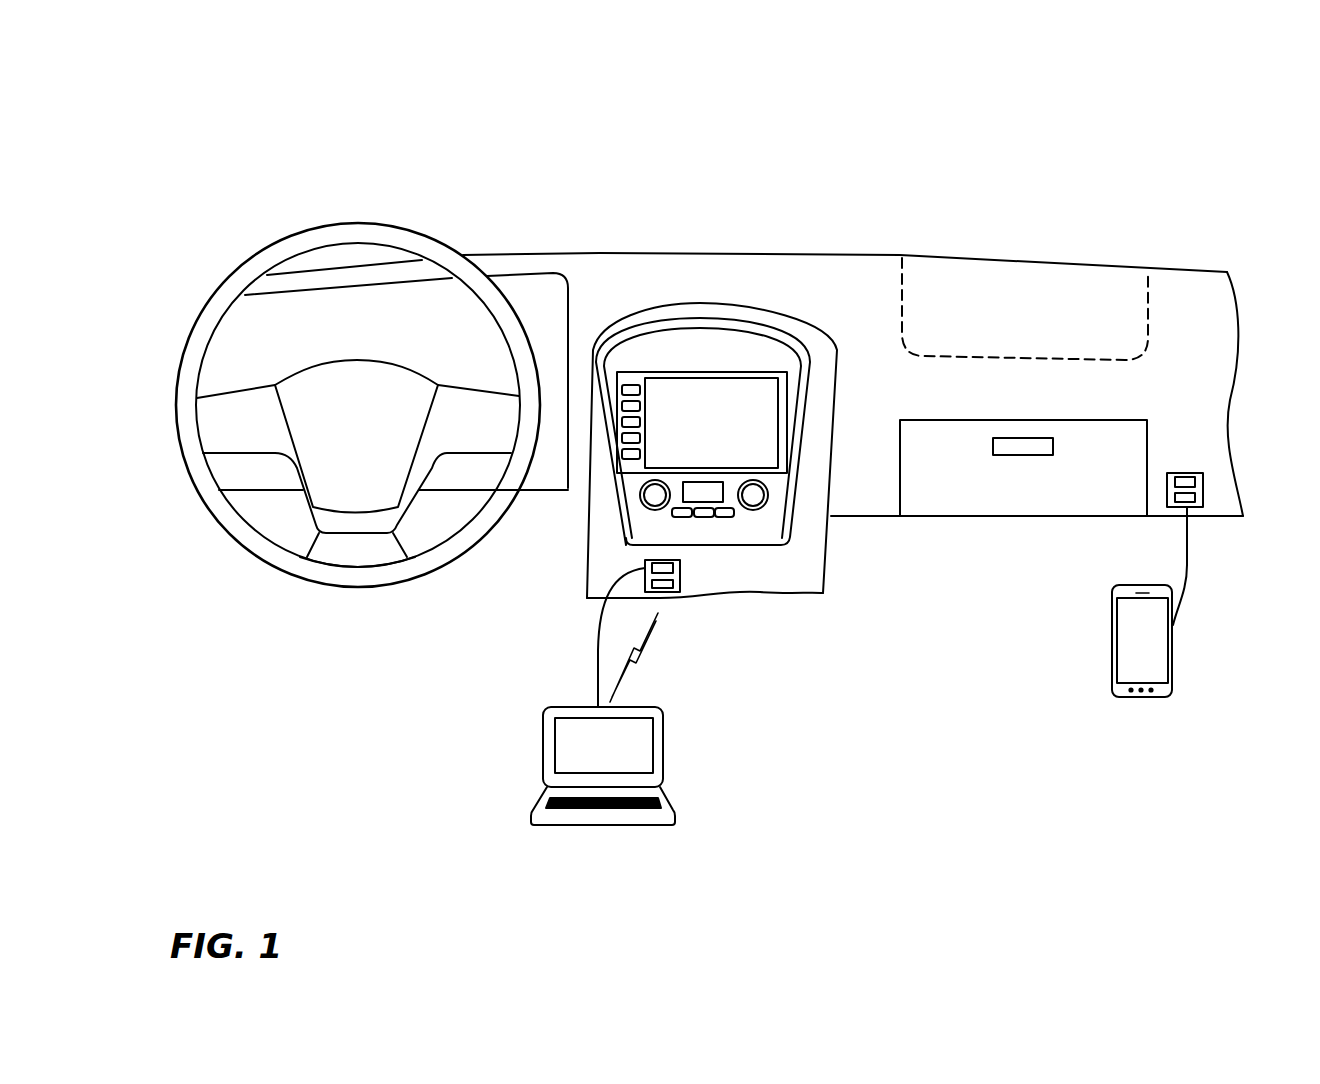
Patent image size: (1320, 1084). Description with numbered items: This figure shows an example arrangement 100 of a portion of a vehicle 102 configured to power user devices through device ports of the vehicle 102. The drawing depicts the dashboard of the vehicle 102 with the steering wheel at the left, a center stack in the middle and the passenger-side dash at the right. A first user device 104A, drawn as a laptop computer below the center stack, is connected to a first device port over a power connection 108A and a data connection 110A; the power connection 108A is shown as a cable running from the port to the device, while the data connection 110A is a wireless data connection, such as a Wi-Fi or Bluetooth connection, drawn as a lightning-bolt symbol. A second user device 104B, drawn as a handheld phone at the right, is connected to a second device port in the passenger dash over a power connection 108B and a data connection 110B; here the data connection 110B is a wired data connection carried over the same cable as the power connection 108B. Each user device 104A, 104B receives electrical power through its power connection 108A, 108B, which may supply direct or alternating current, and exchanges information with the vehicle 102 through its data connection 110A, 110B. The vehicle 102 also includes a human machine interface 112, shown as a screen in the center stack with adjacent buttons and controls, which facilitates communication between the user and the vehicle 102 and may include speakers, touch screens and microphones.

The system 100 is at (229, 60).
The vehicle 102 is at (728, 221).
The first user device 104A is at (682, 581).
The second user device 104B is at (1185, 473).
The power connection 108A is at (597, 645).
The power connection 108B is at (1187, 573).
The wireless data connection 110A is at (643, 652).
The wired data connection 110B is at (1187, 553).
The human machine interface (HMI) 112 is at (689, 431).